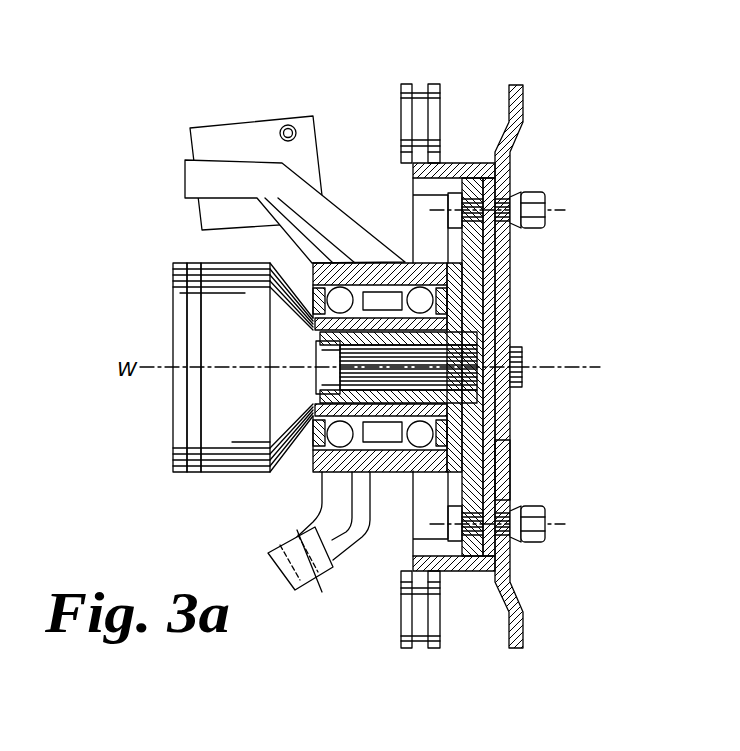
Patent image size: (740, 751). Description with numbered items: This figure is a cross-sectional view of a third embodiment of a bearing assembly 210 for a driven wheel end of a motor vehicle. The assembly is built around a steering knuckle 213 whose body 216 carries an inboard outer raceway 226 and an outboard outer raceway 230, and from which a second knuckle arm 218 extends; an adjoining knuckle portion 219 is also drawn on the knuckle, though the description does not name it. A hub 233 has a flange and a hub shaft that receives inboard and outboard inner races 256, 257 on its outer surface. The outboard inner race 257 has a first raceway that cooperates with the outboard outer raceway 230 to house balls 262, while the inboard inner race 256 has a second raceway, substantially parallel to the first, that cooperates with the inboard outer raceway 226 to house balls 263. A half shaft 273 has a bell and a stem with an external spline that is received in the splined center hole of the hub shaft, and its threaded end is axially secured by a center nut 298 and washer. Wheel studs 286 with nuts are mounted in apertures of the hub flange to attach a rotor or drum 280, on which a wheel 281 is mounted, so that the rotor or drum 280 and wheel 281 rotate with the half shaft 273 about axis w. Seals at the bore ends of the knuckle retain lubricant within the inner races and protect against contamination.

The bearing assembly 210 is at (126, 108).
The mounting plate 219 is at (262, 152).
The steering knuckle 213 is at (352, 214).
The second knuckle arm 218 is at (350, 535).
The rotor or drum 280 is at (442, 99).
The wheel 281 is at (524, 98).
The wheel studs 286 is at (538, 196).
The body 216 is at (447, 278).
The outboard outer raceway 230 is at (498, 310).
The outboard inner race 257 is at (527, 366).
The center nut 298 is at (465, 401).
The hub 233 is at (508, 470).
The balls 262 is at (417, 297).
The inboard outer raceway 226 is at (318, 297).
The balls 263 is at (320, 306).
The inboard inner race 256 is at (318, 397).
The half shaft 273 is at (170, 287).